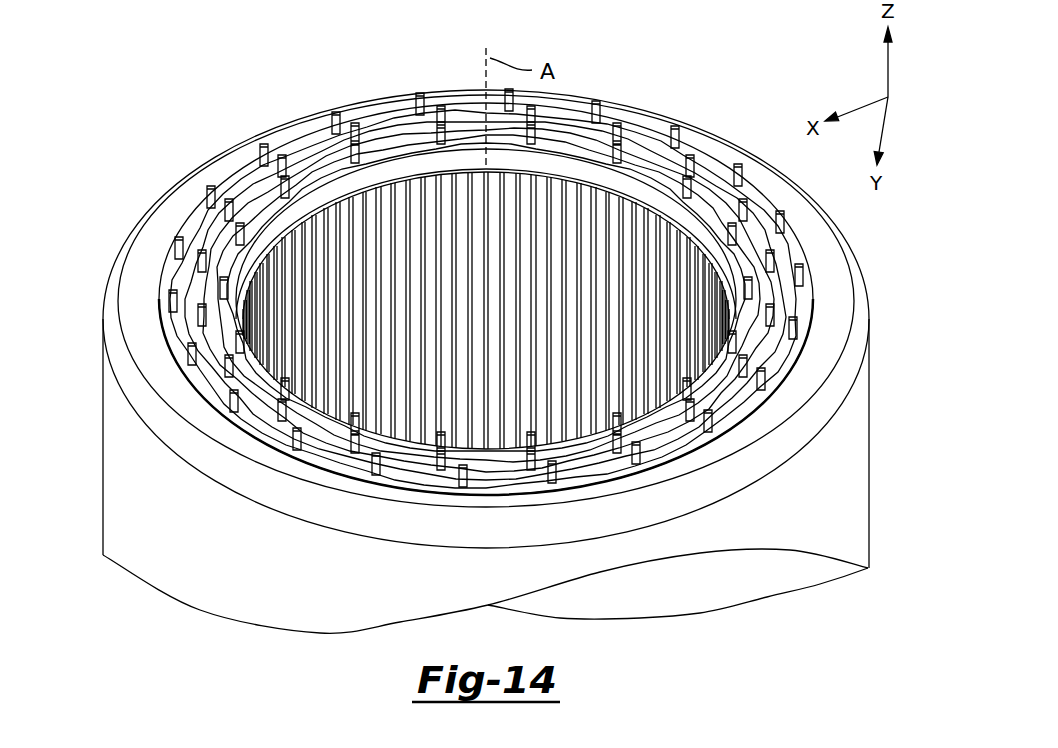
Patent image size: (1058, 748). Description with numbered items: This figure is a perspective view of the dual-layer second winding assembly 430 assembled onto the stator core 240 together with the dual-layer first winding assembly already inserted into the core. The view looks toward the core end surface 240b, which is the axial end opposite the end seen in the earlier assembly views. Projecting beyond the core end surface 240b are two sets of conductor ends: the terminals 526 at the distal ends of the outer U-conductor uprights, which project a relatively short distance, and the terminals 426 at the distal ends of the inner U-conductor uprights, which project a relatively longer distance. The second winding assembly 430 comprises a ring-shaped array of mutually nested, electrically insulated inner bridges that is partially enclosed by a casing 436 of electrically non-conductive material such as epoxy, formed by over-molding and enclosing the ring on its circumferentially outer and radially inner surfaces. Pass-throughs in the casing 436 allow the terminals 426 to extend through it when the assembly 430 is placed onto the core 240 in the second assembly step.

The stator core 240 is at (883, 477).
The core end surface 240b is at (832, 248).
The terminals 426 is at (338, 130).
The dual-layer second winding assembly 430 is at (162, 287).
The casing 436 is at (788, 375).
The terminals 526 is at (258, 165).